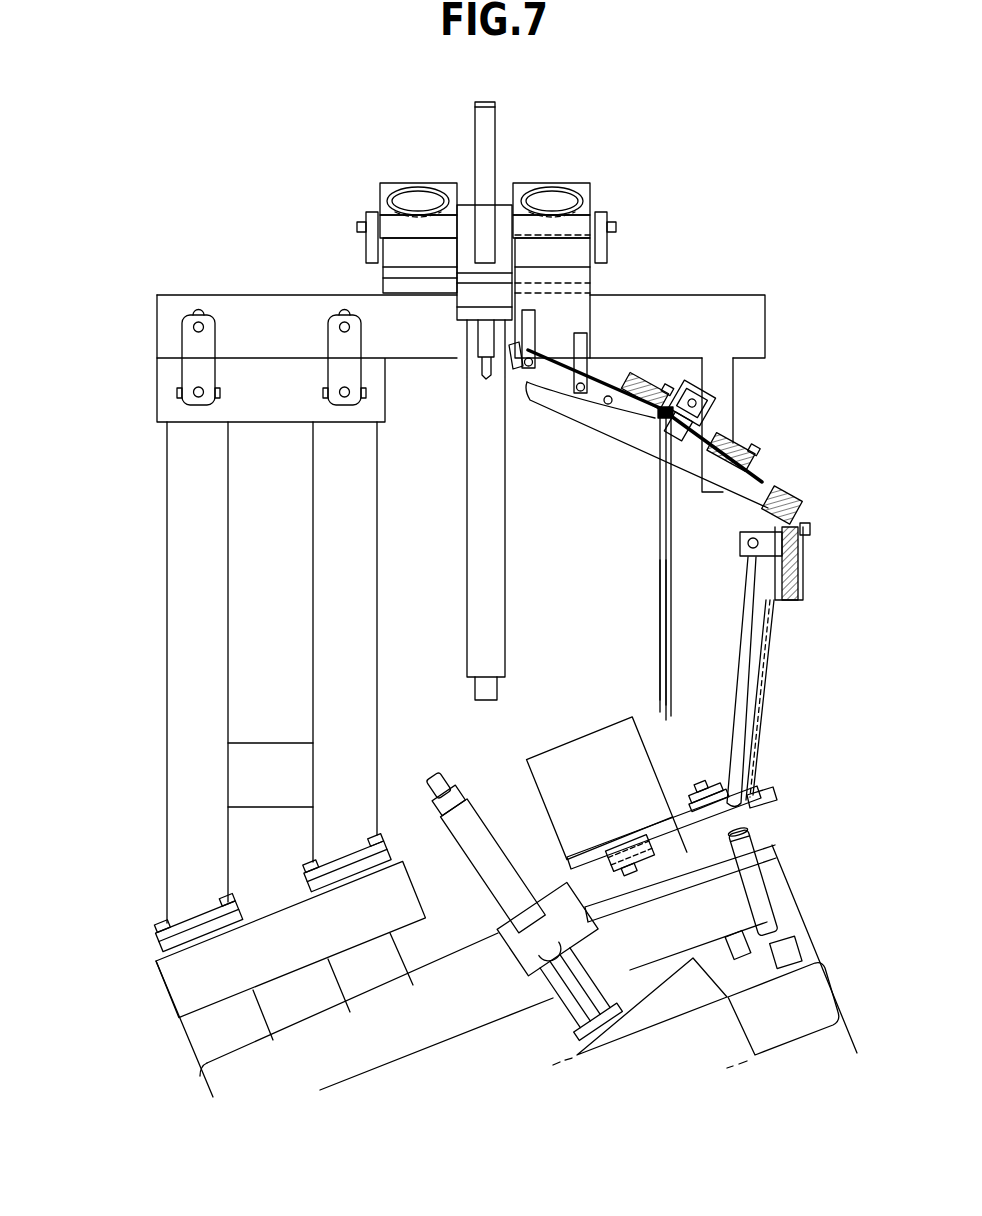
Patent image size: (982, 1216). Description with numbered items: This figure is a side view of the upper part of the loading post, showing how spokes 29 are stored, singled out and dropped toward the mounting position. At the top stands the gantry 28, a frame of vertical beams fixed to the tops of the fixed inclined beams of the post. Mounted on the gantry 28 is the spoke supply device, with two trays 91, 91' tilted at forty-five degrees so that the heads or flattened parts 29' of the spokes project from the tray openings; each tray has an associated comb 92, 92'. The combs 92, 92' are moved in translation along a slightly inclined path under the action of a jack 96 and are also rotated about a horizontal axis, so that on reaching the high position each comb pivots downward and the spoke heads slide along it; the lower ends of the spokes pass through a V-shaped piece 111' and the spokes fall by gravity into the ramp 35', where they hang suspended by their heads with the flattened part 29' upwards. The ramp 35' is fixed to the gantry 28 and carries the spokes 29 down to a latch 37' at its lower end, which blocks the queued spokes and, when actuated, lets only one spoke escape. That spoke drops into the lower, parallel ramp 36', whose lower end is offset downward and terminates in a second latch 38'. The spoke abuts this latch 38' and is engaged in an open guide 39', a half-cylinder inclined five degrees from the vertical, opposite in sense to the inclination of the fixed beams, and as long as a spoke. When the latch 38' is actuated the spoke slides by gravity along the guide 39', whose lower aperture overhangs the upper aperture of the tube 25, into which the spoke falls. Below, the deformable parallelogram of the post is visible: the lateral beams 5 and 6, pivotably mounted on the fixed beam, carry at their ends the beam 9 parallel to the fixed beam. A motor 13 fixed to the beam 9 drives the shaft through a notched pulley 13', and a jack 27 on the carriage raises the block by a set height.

The gantry 28 is at (297, 318).
The ramp 36' is at (711, 453).
The jack 96 is at (481, 590).
The comb 92 is at (388, 231).
The tray 91 is at (418, 153).
The comb 92' is at (587, 212).
The tray 91' is at (553, 153).
The V-shaped piece 111' is at (600, 293).
The ramp 35' is at (638, 409).
The flattened part 29' is at (674, 517).
The spokes 29 is at (655, 651).
The latch 37' is at (704, 419).
The latch 38' is at (796, 540).
The open guide 39' is at (732, 682).
The motor 13 is at (624, 819).
The notched pulley 13' is at (748, 768).
The jack 27 is at (460, 818).
The tube 25 is at (745, 845).
The beam 9 is at (795, 920).
The lateral beam 6 is at (800, 1018).
The lateral beam 5 is at (472, 995).